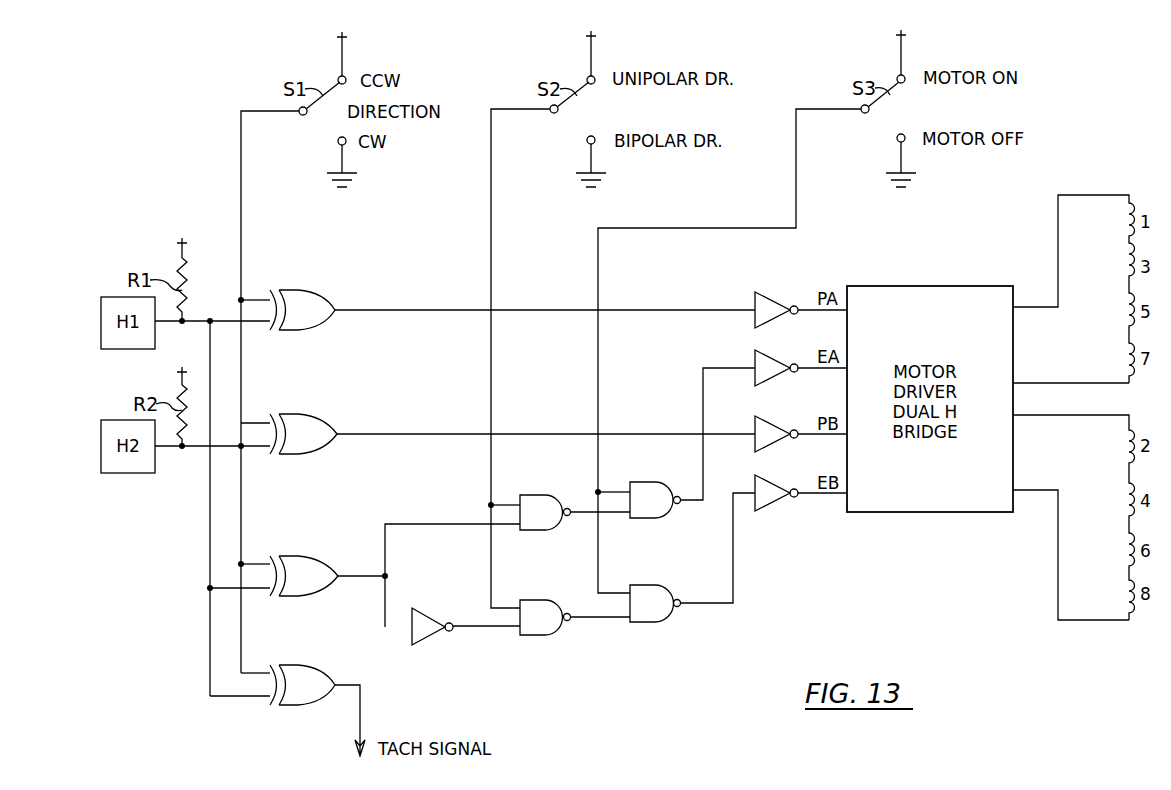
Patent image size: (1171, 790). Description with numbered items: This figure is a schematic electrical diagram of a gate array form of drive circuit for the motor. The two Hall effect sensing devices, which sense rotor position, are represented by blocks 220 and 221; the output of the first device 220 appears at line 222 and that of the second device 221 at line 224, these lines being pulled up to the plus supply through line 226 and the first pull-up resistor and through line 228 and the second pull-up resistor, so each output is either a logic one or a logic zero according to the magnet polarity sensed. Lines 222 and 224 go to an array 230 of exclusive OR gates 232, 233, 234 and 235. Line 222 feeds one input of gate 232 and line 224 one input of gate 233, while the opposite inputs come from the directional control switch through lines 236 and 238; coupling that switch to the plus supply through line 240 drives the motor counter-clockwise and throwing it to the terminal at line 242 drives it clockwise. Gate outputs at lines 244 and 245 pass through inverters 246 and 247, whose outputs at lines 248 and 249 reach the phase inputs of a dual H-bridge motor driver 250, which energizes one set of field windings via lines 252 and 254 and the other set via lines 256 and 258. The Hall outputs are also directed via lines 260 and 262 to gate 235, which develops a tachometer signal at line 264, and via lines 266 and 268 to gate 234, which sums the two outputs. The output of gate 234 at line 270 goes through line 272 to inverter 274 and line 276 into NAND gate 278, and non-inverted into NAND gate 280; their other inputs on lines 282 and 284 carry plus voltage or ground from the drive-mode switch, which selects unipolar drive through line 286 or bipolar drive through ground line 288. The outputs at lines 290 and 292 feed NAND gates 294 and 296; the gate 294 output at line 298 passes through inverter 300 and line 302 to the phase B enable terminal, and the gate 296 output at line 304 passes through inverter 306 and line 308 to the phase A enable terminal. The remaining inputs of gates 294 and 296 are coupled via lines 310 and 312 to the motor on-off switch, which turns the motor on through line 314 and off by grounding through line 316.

The Hall effect sensing device H1 220 is at (128, 349).
The Hall effect sensing device H2 221 is at (121, 474).
The output line of device 220 222 is at (194, 318).
The output line of device 221 224 is at (185, 447).
The pull-up line 226 is at (183, 258).
The pull-up line 228 is at (183, 385).
The array of exclusive OR gates 230 is at (416, 231).
The exclusive OR gate 232 is at (316, 327).
The exclusive OR gate 233 is at (320, 450).
The exclusive OR gate 234 is at (315, 555).
The exclusive OR gate 235 is at (316, 670).
The direction control line 236 is at (241, 209).
The direction control line 238 is at (258, 300).
The plus supply line 240 is at (341, 58).
The clockwise terminal line 242 is at (341, 157).
The output line of gate 232 244 is at (394, 310).
The output line of gate 233 245 is at (373, 434).
The inverter 246 is at (757, 295).
The inverter 247 is at (760, 420).
The output line of inverter 246 248 is at (803, 305).
The output line of inverter 247 249 is at (803, 430).
The dual H-bridge motor driver 250 is at (940, 286).
The winding output line 252 is at (1058, 249).
The winding output line 254 is at (1050, 383).
The winding output line 256 is at (1057, 418).
The winding output line 258 is at (1058, 533).
The Hall effect output line 260 is at (210, 548).
The Hall effect output line 262 is at (241, 621).
The tachometer signal output line 264 is at (361, 705).
The input line to gate 234 266 is at (257, 565).
The input line to gate 234 268 is at (210, 588).
The output line of gate 234 270 is at (356, 577).
The line to inverter 274 272 is at (386, 546).
The inverter 274 is at (438, 640).
The output line of inverter 274 276 is at (475, 626).
The NAND gate 278 is at (545, 636).
The NAND gate 280 is at (540, 531).
The switch S2 input line 282 is at (492, 357).
The switch S2 input line 284 is at (508, 497).
The plus supply line 286 is at (590, 57).
The ground line 288 is at (590, 157).
The output line of NAND gate 278 290 is at (580, 616).
The output line of NAND gate 280 292 is at (578, 507).
The NAND gate 294 is at (655, 623).
The NAND gate 296 is at (655, 519).
The output line of gate 294 298 is at (734, 553).
The inverter 300 is at (762, 480).
The enable B line 302 is at (808, 490).
The output line of gate 296 304 is at (703, 389).
The inverter 306 is at (757, 355).
The enable A line 308 is at (803, 364).
The switch S3 output line 310 is at (598, 398).
The switch S3 output line 312 is at (615, 492).
The plus supply line 314 is at (900, 58).
The ground line 316 is at (901, 157).